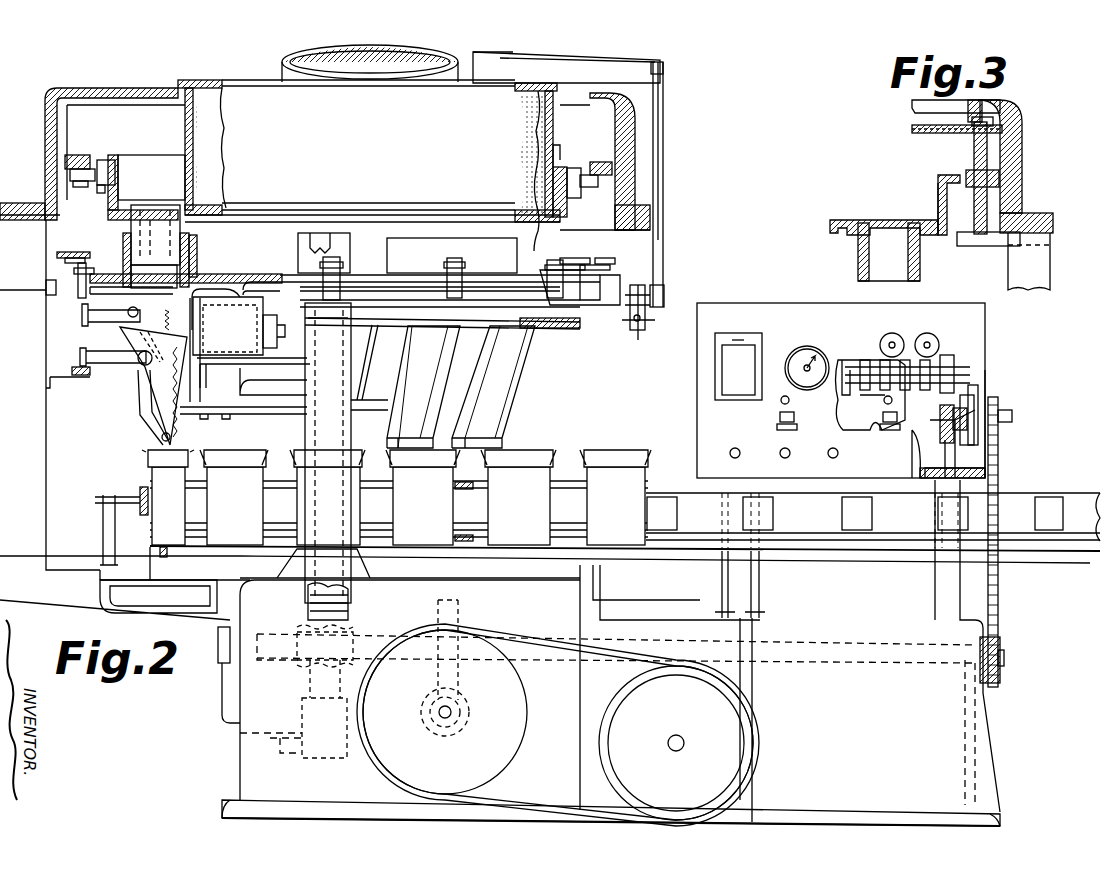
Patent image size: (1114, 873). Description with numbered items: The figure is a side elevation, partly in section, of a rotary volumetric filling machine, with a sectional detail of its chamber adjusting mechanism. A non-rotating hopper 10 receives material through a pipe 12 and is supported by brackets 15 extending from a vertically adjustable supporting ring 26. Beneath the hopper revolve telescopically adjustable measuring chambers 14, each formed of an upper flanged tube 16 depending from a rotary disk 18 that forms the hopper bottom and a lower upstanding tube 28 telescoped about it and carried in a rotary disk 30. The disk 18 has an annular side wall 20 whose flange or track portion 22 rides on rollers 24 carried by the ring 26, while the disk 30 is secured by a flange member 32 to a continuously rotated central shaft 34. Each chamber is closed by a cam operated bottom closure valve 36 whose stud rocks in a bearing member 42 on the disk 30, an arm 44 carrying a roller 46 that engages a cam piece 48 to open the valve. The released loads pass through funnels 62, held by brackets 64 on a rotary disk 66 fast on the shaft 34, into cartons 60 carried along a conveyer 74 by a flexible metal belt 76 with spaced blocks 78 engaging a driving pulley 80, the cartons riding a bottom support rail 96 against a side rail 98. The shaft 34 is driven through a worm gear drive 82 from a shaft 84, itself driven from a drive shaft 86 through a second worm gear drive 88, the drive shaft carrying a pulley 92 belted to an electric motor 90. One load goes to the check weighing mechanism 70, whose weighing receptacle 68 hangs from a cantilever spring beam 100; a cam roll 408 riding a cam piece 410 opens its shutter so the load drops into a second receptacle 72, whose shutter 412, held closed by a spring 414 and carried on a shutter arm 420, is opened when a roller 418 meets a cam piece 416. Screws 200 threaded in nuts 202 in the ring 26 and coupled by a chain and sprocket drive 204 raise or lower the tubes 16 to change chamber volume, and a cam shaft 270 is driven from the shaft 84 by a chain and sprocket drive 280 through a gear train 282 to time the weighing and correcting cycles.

In FIG. 2, the hopper 10 is at (210, 80).
In FIG. 2, the pipe 12 is at (288, 60).
In FIG. 2, the measuring chambers 14 is at (158, 215).
In FIG. 2, the brackets 15 is at (613, 156).
In FIG. 2, the flanged tubes 16 is at (128, 225).
In FIG. 3, the flanged tubes 16 is at (857, 262).
In FIG. 2, the rotary disk 18 is at (208, 220).
In FIG. 3, the rotary disk 18 is at (832, 220).
In FIG. 2, the annular side wall 20 is at (118, 172).
In FIG. 3, the annular side wall 20 is at (938, 202).
In FIG. 2, the flange or track portion 22 is at (105, 160).
In FIG. 3, the flange or track portion 22 is at (950, 173).
In FIG. 2, the rollers 24 is at (100, 190).
In FIG. 2, the supporting ring 26 is at (77, 156).
In FIG. 3, the supporting ring 26 is at (1011, 170).
In FIG. 2, the upstanding tubes 28 is at (192, 256).
In FIG. 2, the rotary disk 30 is at (235, 275).
In FIG. 2, the flange member 32 is at (375, 285).
In FIG. 2, the central shaft 34 is at (300, 685).
In FIG. 2, the bottom closure valve 36 is at (500, 335).
In FIG. 2, the bearing member 42 is at (78, 279).
In FIG. 2, the arm 44 is at (78, 254).
In FIG. 2, the roller 46 is at (78, 267).
In FIG. 2, the cam piece 48 is at (66, 257).
In FIG. 2, the cartons 60 is at (396, 497).
In FIG. 2, the funnels 62 is at (523, 400).
In FIG. 2, the brackets 64 is at (355, 358).
In FIG. 2, the rotary disk 66 is at (273, 415).
In FIG. 2, the weighing receptacle 68 is at (148, 318).
In FIG. 2, the check weighing mechanism 70 is at (108, 337).
In FIG. 2, the second receptacle 72 is at (153, 386).
In FIG. 2, the conveyer 74 is at (1019, 559).
In FIG. 2, the flexible metal belt 76 is at (1020, 490).
In FIG. 2, the blocks 78 is at (743, 515).
In FIG. 2, the driving pulley 80 is at (460, 483).
In FIG. 2, the worm gear drive 82 is at (290, 621).
In FIG. 2, the shaft 84 is at (786, 660).
In FIG. 2, the drive shaft 86 is at (453, 705).
In FIG. 2, the second worm gear drive 88 is at (424, 692).
In FIG. 2, the electric motor 90 is at (743, 712).
In FIG. 2, the pulley 92 is at (504, 745).
In FIG. 2, the bottom support rail 96 is at (160, 550).
In FIG. 2, the side rail 98 is at (138, 490).
In FIG. 2, the cantilever spring beam 100 is at (225, 306).
In FIG. 3, the screws 200 is at (983, 200).
In FIG. 3, the nuts 202 is at (1001, 161).
In FIG. 3, the chain and sprocket drive 204 is at (917, 126).
In FIG. 2, the cam shaft 270 is at (930, 365).
In FIG. 2, the chain and sprocket drive 280 is at (998, 445).
In FIG. 2, the gear train 282 is at (980, 373).
In FIG. 2, the cam roll 408 is at (80, 312).
In FIG. 2, the cam piece 410 is at (450, 328).
In FIG. 2, the shutter 412 is at (150, 424).
In FIG. 2, the spring 414 is at (171, 420).
In FIG. 2, the cam piece 416 is at (65, 375).
In FIG. 2, the roller 418 is at (80, 355).
In FIG. 2, the shutter arm 420 is at (118, 365).